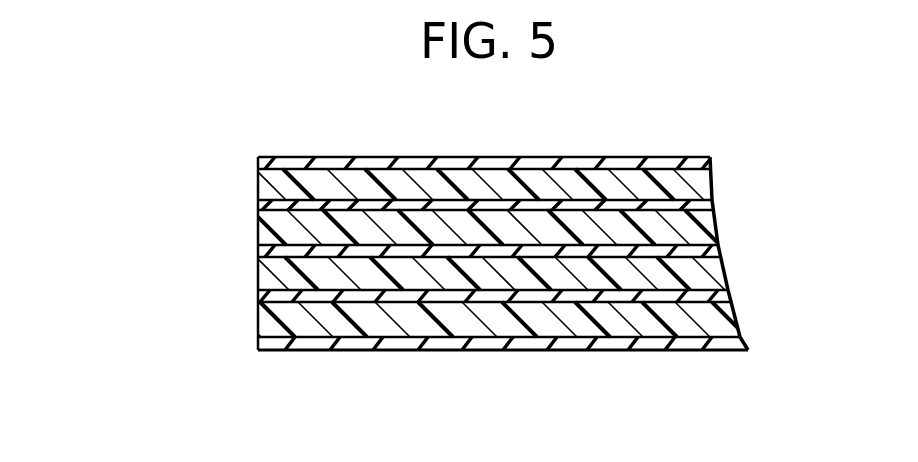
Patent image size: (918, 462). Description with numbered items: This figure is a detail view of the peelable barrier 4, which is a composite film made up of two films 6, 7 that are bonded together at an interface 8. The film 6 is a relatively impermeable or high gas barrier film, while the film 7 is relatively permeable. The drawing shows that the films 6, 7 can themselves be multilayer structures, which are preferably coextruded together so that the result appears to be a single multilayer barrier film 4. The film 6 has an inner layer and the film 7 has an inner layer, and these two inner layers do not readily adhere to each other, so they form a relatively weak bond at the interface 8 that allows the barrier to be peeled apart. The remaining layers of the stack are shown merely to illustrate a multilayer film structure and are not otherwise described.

The peelable barrier 4 is at (121, 157).
The film 6 is at (241, 157).
The film 7 is at (241, 294).
The interface 8 is at (222, 289).